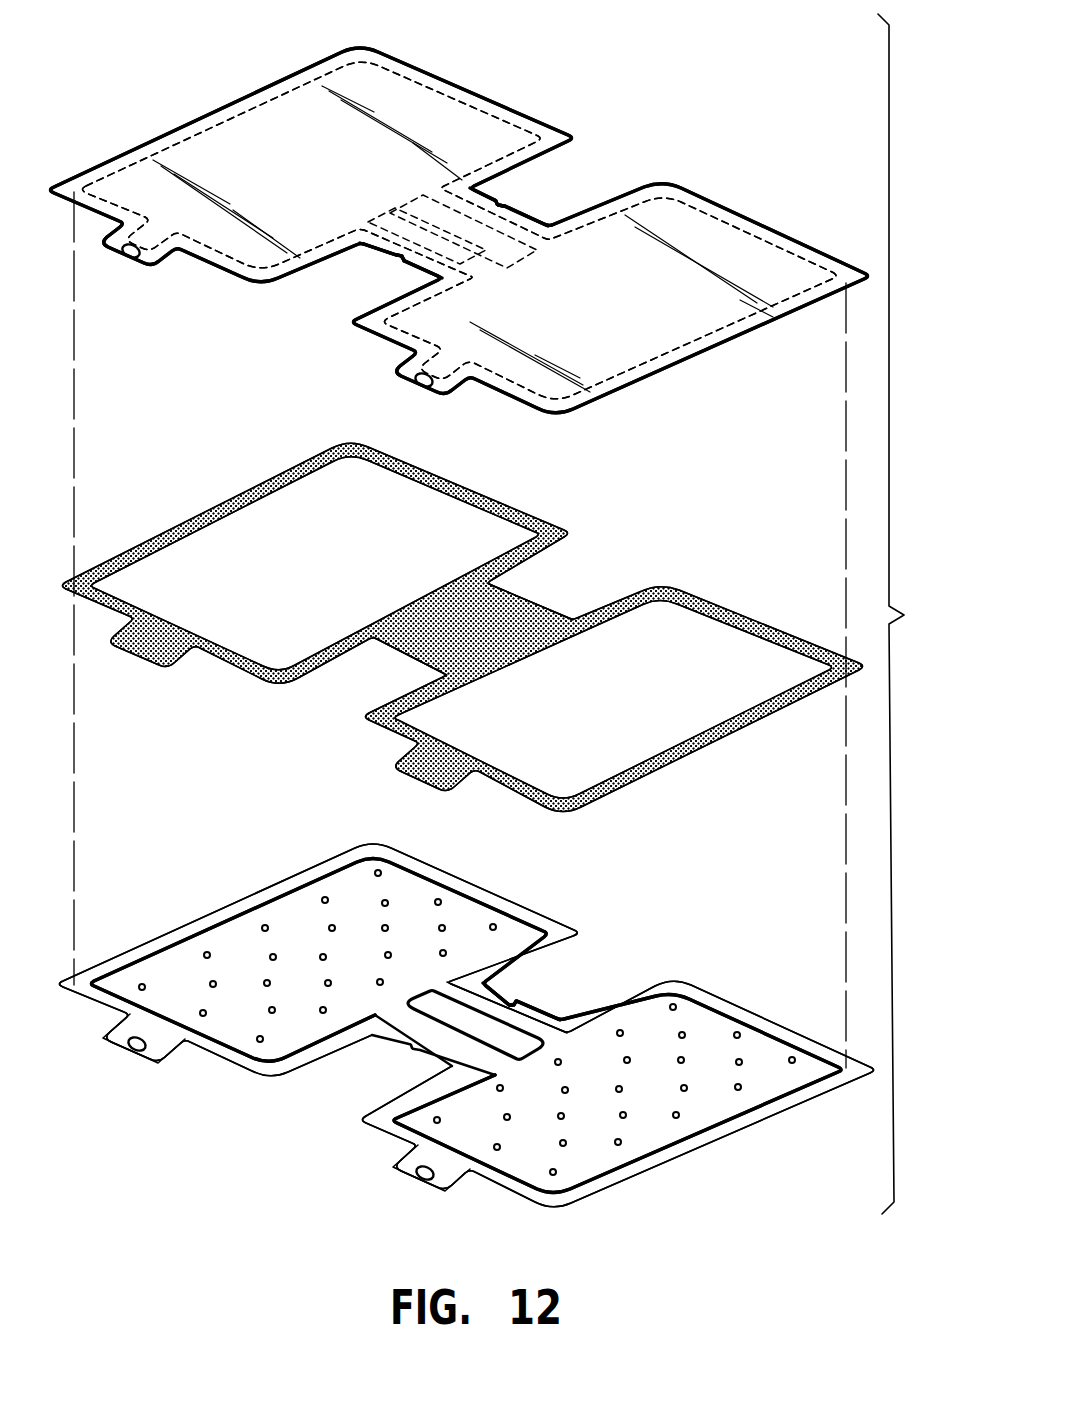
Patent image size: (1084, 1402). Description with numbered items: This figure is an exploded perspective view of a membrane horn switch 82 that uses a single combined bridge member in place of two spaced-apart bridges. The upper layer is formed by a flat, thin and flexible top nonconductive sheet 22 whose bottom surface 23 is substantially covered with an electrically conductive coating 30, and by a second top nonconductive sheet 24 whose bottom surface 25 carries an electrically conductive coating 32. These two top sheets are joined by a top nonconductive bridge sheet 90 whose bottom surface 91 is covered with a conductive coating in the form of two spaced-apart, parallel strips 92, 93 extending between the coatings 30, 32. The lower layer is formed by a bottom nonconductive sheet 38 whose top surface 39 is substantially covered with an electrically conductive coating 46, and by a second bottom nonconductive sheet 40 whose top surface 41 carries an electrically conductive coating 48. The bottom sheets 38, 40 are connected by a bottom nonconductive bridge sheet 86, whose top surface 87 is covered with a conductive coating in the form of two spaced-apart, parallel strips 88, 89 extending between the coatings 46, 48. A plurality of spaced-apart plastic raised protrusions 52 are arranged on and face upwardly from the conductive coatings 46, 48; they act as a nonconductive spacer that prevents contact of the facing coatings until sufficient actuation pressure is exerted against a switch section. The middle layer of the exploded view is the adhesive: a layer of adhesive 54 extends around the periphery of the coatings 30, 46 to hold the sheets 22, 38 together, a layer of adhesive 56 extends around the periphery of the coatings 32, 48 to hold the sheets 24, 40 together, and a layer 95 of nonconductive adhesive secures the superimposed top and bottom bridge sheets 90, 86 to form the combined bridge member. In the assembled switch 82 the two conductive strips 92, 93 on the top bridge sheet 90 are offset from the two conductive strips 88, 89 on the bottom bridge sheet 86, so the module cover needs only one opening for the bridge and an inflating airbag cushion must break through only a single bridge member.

The top nonconductive sheet 22 is at (410, 58).
The bottom surface 23 is at (462, 90).
The top nonconductive sheet 24 is at (694, 189).
The bottom surface 25 is at (793, 237).
The electrically conductive coating 30 is at (268, 103).
The electrically conductive coating 32 is at (732, 225).
The bottom nonconductive sheet 38 is at (203, 1044).
The top surface 39 is at (275, 1074).
The bottom nonconductive sheet 40 is at (540, 1210).
The top surface 41 is at (583, 1196).
The electrically conductive coating 46 is at (195, 1048).
The electrically conductive coating 48 is at (470, 1181).
The raised protrusions 52 is at (322, 900).
The layer of adhesive 54 is at (237, 498).
The layer of adhesive 56 is at (777, 627).
The membrane horn switch 82 is at (915, 614).
The bottom nonconductive bridge sheet 86 is at (542, 1010).
The top surface 87 is at (498, 997).
The conductive strip 88 is at (400, 1042).
The conductive strip 89 is at (493, 1010).
The top nonconductive bridge sheet 90 is at (493, 200).
The bottom surface 91 is at (547, 213).
The conductive strip 92 is at (370, 250).
The conductive strip 93 is at (420, 277).
The layer of nonconductive adhesive 95 is at (507, 607).